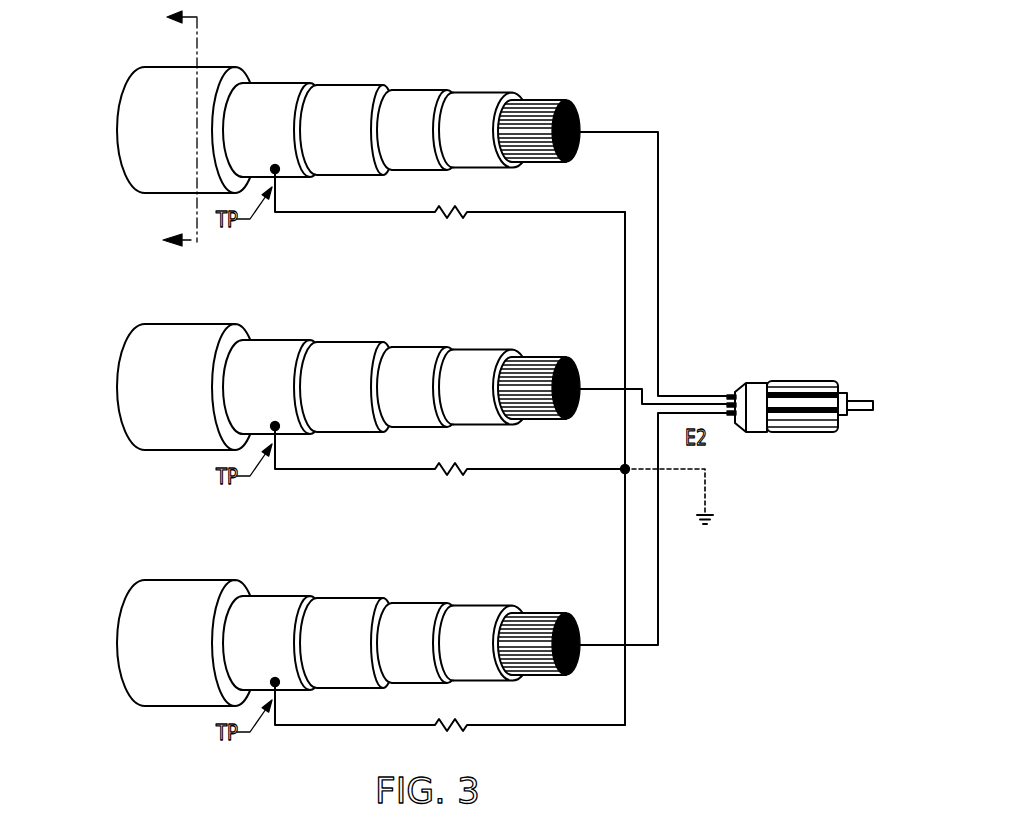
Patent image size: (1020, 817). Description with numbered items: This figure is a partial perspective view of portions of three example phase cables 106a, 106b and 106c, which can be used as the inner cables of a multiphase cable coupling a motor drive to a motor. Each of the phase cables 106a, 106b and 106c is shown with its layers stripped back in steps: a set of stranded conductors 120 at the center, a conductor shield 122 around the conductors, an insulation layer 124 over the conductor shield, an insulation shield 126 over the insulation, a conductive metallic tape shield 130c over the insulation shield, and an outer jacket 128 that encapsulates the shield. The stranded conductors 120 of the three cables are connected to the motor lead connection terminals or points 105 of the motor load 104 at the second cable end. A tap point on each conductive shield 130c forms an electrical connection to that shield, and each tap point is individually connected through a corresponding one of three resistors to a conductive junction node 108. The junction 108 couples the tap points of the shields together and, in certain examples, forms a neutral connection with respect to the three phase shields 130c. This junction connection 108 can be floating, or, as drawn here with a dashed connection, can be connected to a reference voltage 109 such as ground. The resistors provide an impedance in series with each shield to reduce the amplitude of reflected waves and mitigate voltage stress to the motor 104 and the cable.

The motor 104 is at (801, 381).
The motor lead connection terminals 105 is at (724, 386).
The first phase cable 106a is at (384, 201).
The second phase cable 106b is at (384, 390).
The third phase cable 106c is at (384, 579).
The conductive junction 108 is at (580, 466).
The reference voltage 109 is at (708, 503).
The stranded conductors 120 is at (547, 372).
The conductor shield 122 is at (481, 369).
The insulation layer 124 is at (412, 370).
The insulation shield 126 is at (348, 372).
The jacket 128 is at (182, 370).
The conductive metallic tape shield 130c is at (264, 362).